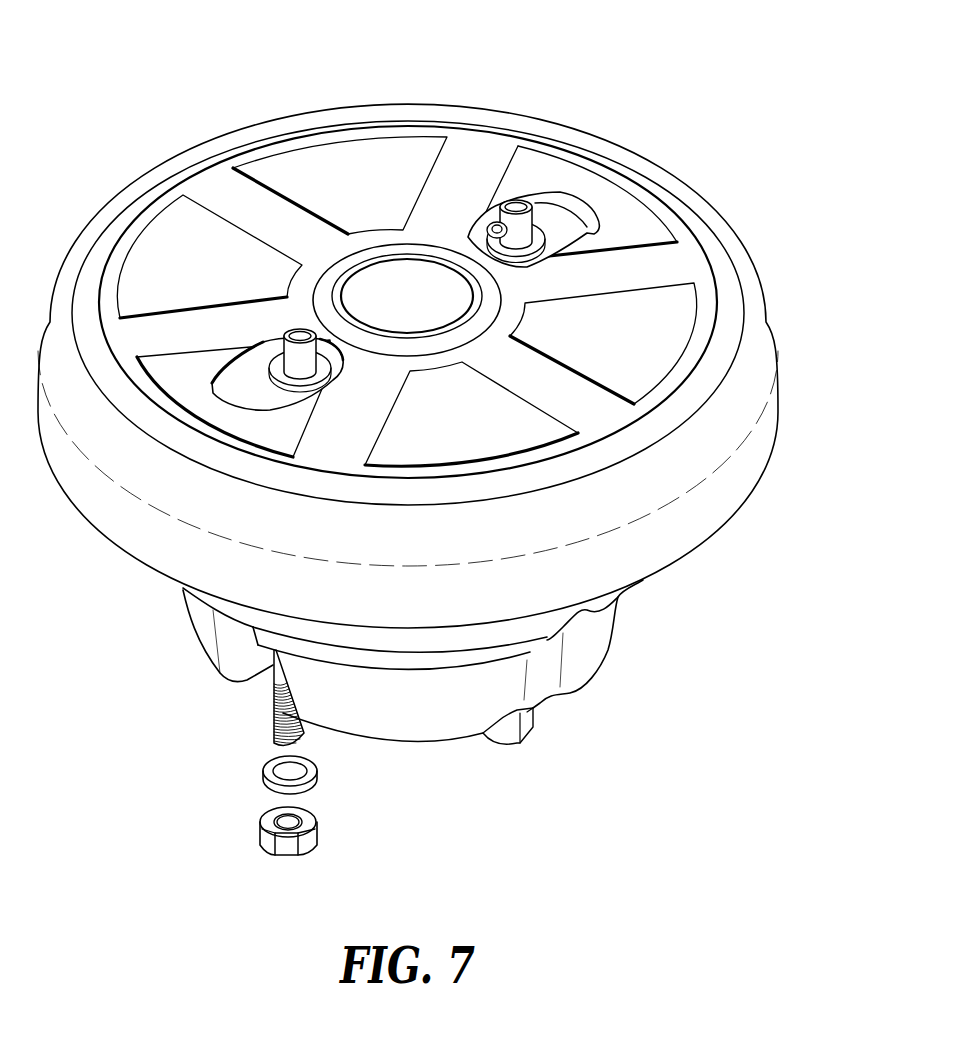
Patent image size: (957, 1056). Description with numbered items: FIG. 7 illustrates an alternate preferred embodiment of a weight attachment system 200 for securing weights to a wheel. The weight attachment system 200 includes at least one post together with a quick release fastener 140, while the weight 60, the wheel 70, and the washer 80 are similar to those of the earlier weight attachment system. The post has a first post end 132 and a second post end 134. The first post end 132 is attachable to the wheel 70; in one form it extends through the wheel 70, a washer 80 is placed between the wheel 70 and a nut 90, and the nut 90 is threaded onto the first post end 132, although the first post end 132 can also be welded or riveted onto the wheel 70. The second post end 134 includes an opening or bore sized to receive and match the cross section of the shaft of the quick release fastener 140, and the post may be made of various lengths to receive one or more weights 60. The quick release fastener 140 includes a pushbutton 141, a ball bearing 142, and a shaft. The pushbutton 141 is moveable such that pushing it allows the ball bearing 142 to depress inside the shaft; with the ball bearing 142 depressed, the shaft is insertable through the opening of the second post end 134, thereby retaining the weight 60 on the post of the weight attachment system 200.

The weight attachment system 200 is at (648, 73).
The weight 60 is at (572, 178).
The wheel 70 is at (748, 372).
The washer 80 is at (262, 780).
The nut 90 is at (315, 839).
The first post end 132 is at (273, 722).
The second post end 134 is at (517, 199).
The quick release fastener 140 is at (590, 226).
The pushbutton 141 is at (486, 227).
The ball bearing 142 is at (284, 349).